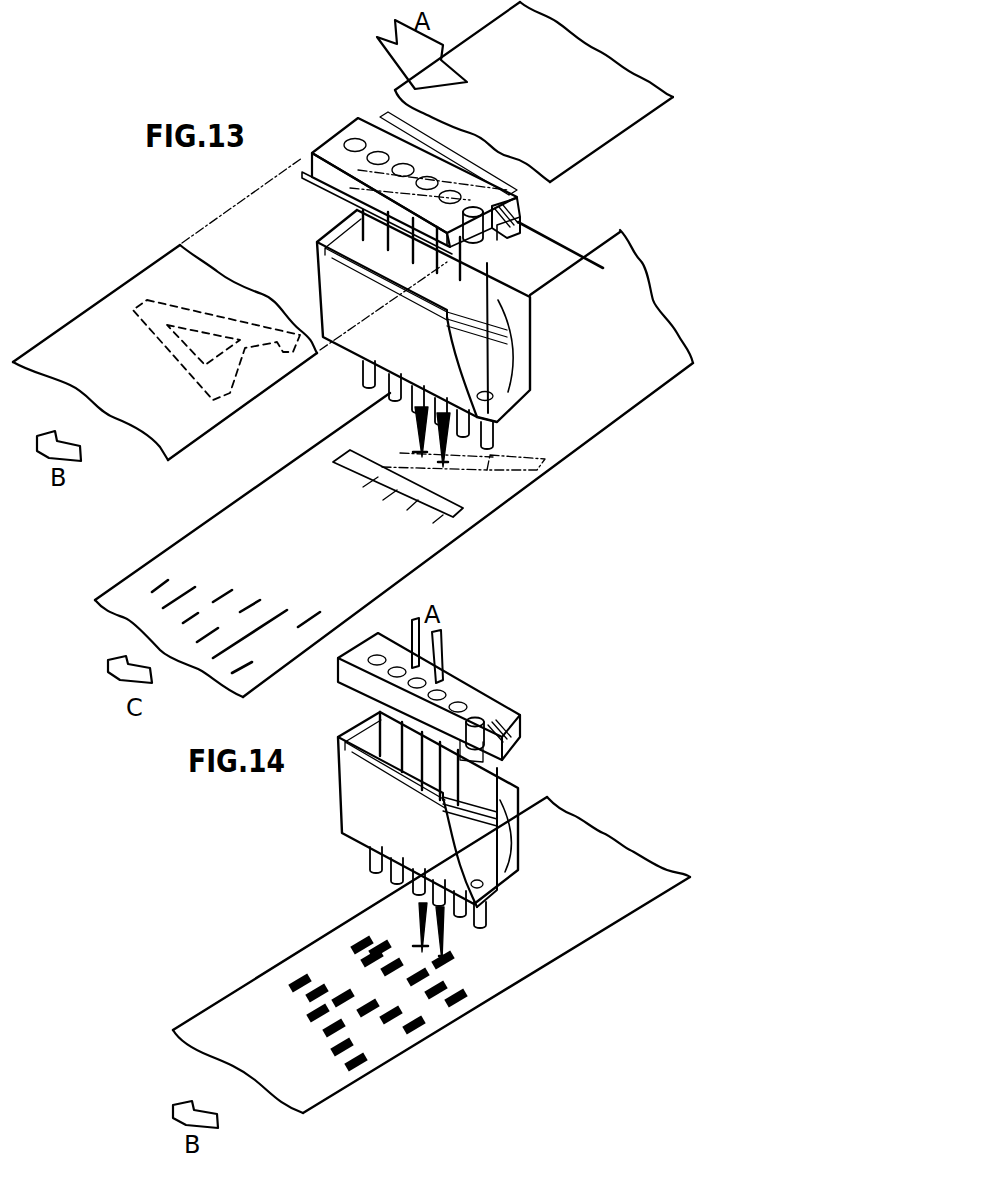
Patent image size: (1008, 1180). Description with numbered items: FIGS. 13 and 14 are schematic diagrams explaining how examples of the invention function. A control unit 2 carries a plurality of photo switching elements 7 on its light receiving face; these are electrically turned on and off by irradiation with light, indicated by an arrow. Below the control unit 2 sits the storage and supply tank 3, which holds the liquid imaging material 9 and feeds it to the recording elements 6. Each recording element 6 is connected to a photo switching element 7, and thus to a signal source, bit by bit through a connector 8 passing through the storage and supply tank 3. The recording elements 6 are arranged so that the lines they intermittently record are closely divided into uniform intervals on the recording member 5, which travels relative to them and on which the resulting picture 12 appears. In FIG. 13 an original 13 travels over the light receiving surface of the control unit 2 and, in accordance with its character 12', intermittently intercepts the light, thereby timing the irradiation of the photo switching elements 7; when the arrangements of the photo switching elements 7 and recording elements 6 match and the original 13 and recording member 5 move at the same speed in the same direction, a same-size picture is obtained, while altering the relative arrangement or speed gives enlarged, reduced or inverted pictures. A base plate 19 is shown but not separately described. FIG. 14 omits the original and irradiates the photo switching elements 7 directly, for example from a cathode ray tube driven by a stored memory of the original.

In FIG. 13, the control unit 2 is at (332, 136).
In FIG. 14, the control unit 2 is at (340, 655).
In FIG. 13, the storage and supply tank 3 is at (529, 339).
In FIG. 14, the storage and supply tank 3 is at (343, 765).
In FIG. 13, the recording member 5 is at (423, 561).
In FIG. 14, the recording member 5 is at (487, 997).
In FIG. 13, the recording elements 6 is at (500, 437).
In FIG. 14, the recording elements 6 is at (490, 923).
In FIG. 13, the photo switching elements 7 is at (487, 236).
In FIG. 14, the photo switching elements 7 is at (376, 656).
In FIG. 13, the connector 8 is at (528, 396).
In FIG. 14, the connector 8 is at (495, 762).
In FIG. 13, the liquid imaging material 9 is at (338, 236).
In FIG. 14, the liquid imaging material 9 is at (367, 718).
In FIG. 13, the electrode pattern 12 is at (439, 509).
In FIG. 14, the electrode pattern 12 is at (377, 1005).
In FIG. 13, the character 12' is at (169, 338).
In FIG. 13, the original 13 is at (130, 280).
In FIG. 13, the base plate 19 is at (571, 246).